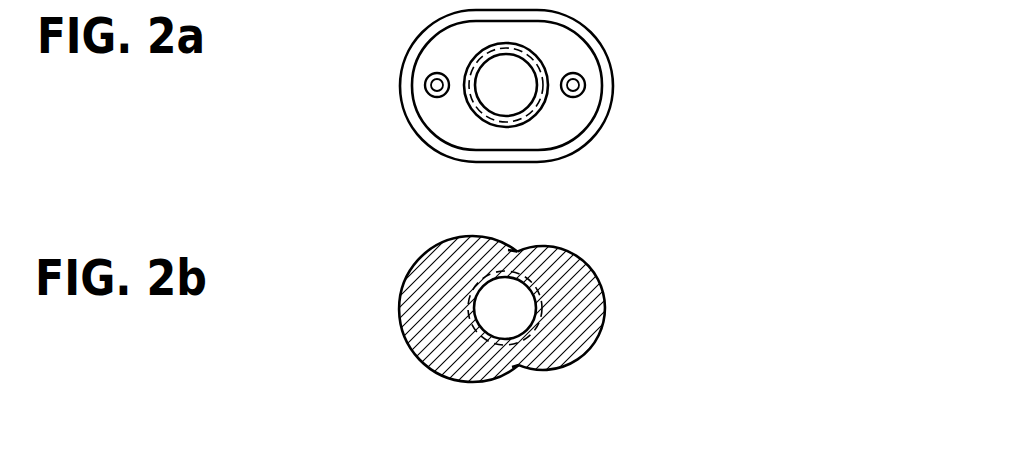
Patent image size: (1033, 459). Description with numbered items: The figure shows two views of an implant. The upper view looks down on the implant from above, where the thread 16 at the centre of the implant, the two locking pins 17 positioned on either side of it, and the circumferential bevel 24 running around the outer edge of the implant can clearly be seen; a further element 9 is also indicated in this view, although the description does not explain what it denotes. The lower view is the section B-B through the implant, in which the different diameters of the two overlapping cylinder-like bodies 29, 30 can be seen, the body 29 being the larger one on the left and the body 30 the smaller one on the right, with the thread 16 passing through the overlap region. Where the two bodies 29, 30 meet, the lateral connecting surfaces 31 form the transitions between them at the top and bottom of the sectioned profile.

In FIG. 2a, the retaining plate 9 is at (447, 110).
In FIG. 2a, the thread 16 is at (543, 65).
In FIG. 2b, the thread 16 is at (540, 302).
In FIG. 2a, the locking pins 17 is at (431, 86).
In FIG. 2a, the circumferential bevel 24 is at (415, 50).
In FIG. 2b, the cylinder-like body 29 is at (403, 280).
In FIG. 2b, the cylinder-like body 30 is at (605, 318).
In FIG. 2b, the lateral connecting surfaces 31 is at (512, 244).